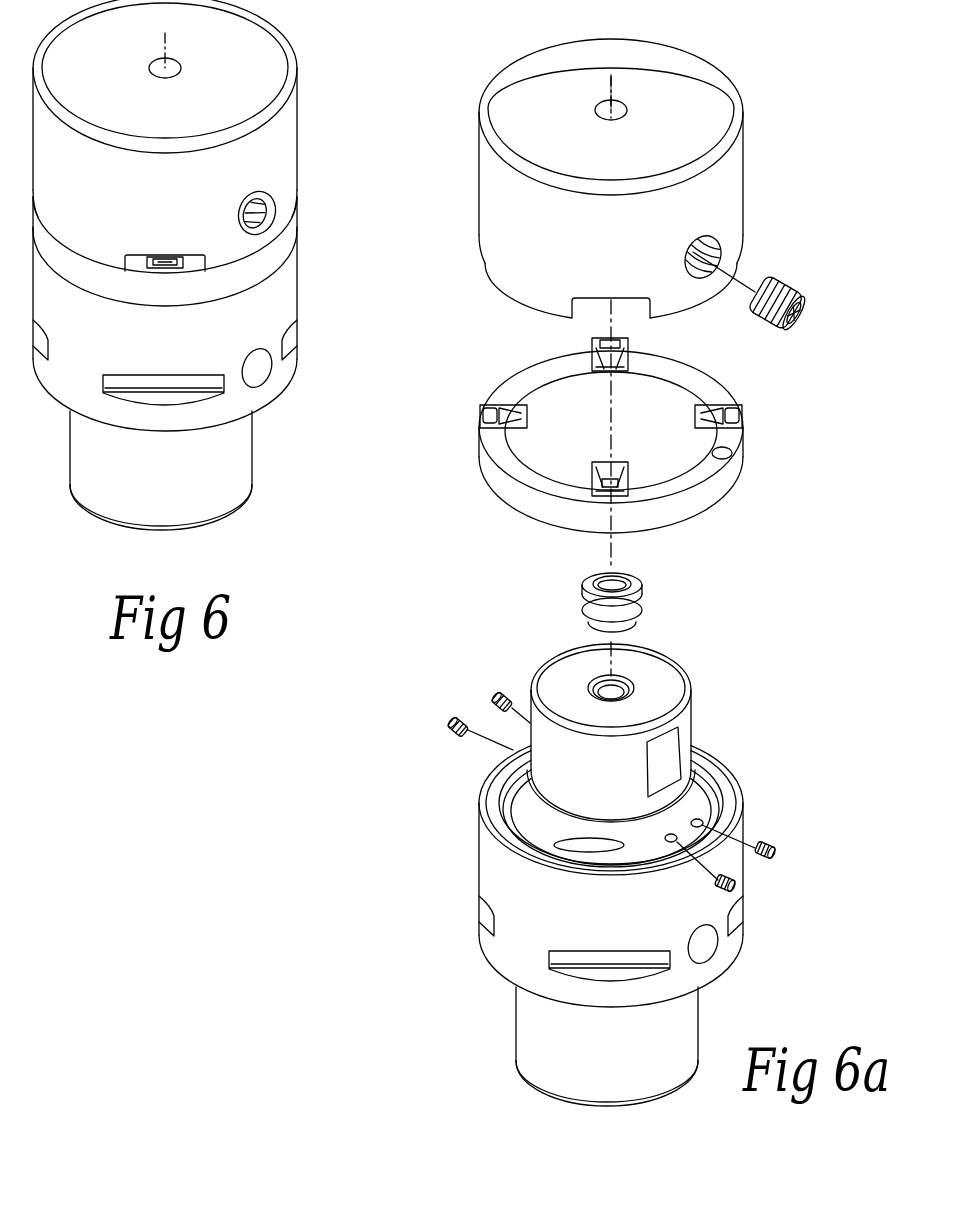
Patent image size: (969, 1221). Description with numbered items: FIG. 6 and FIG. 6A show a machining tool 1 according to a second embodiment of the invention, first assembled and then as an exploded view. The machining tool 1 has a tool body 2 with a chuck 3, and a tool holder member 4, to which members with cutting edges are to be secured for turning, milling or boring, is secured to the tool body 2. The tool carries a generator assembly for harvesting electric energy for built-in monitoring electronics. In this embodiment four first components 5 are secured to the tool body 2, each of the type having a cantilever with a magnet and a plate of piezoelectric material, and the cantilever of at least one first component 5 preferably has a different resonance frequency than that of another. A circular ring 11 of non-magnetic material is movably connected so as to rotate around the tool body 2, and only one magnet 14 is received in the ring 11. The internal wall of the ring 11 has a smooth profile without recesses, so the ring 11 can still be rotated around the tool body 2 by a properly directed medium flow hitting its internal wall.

In FIG. 6, the machining tool 1 is at (297, 250).
In FIG. 6A, the tool body 2 is at (482, 937).
In FIG. 6A, the chuck 3 is at (518, 1027).
In FIG. 6A, the tool holder member 4 is at (733, 186).
In FIG. 6A, the first component 5 is at (597, 342).
In FIG. 6A, the ring 11 is at (703, 498).
In FIG. 6A, the magnet 14 is at (723, 448).